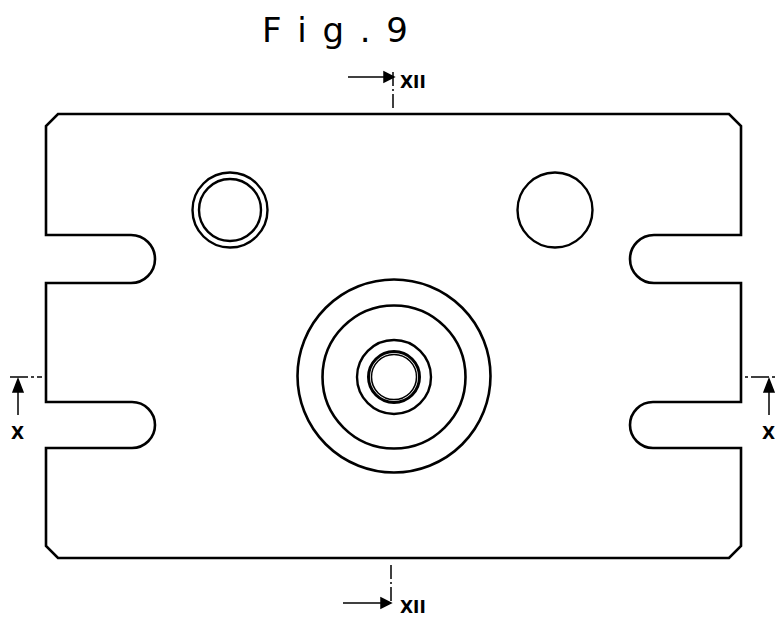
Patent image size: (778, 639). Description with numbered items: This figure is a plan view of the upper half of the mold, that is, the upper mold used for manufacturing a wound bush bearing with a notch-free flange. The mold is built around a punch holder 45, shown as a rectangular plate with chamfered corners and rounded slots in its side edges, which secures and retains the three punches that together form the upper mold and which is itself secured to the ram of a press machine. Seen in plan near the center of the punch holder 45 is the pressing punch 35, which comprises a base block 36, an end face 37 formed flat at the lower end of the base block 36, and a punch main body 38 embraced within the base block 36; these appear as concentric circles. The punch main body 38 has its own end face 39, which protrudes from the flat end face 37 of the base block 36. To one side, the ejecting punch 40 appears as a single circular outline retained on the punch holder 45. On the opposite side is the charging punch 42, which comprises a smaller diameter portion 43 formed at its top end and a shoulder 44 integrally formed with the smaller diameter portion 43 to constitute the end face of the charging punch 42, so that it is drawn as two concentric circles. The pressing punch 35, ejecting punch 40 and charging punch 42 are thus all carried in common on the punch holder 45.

The pressing punch 35 is at (387, 418).
The base block 36 is at (475, 333).
The end face of the base block 37 is at (338, 387).
The punch main body 38 is at (427, 370).
The end face of the punch main body 39 is at (422, 390).
The ejecting punch 40 is at (551, 172).
The charging punch 42 is at (222, 161).
The smaller diameter portion 43 is at (212, 212).
The shoulder 44 is at (262, 198).
The punch holder 45 is at (670, 146).